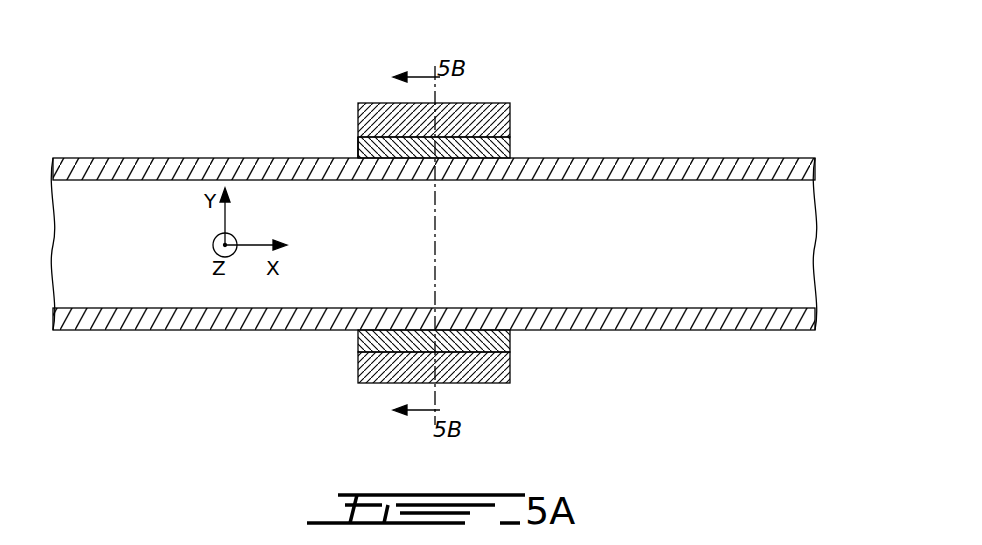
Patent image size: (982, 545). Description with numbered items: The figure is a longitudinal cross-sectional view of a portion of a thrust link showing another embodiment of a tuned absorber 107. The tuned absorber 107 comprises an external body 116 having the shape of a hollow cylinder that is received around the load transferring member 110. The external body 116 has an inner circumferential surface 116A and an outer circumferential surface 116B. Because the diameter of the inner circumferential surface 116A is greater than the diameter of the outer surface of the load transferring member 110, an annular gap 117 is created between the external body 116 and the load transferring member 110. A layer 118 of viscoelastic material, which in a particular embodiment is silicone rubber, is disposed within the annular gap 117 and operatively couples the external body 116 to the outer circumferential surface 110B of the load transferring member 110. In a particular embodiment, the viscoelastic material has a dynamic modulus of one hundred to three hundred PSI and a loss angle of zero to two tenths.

The tuned absorber 107 is at (415, 201).
The load transferring member 110 is at (433, 230).
The outer circumferential surface 110B is at (715, 158).
The external body 116 is at (511, 122).
The inner circumferential surface 116A is at (503, 339).
The outer circumferential surface 116B is at (504, 89).
The annular gap 117 is at (334, 147).
The layer of viscoelastic material 118 is at (511, 150).